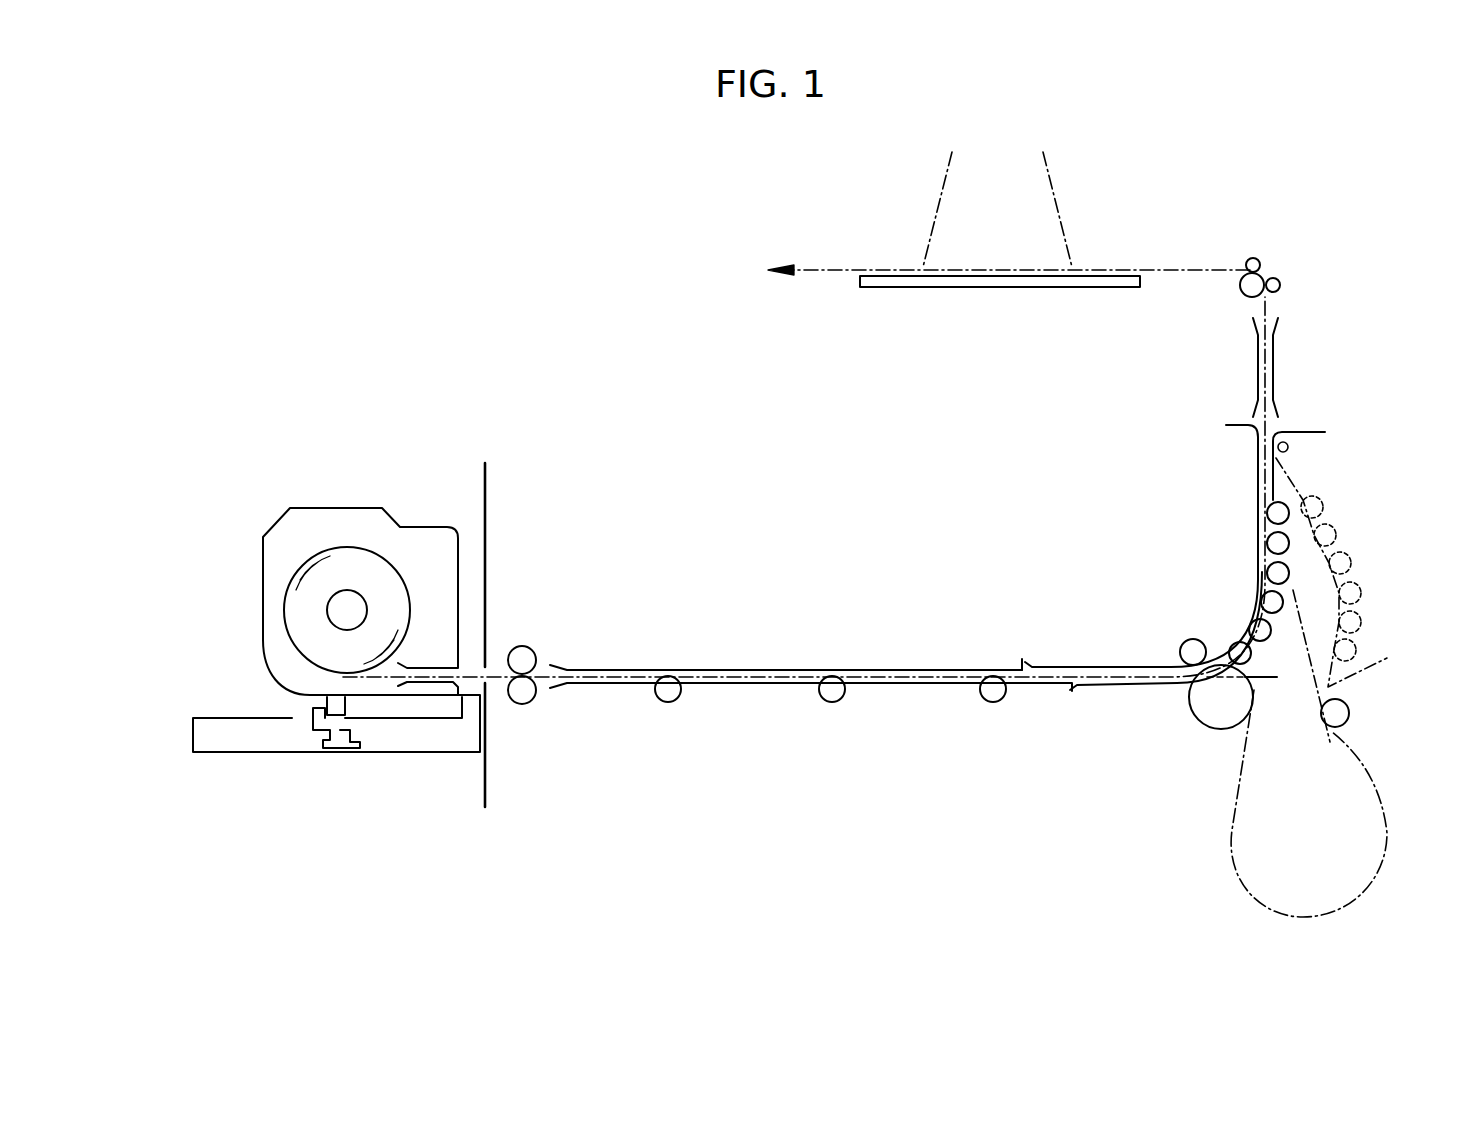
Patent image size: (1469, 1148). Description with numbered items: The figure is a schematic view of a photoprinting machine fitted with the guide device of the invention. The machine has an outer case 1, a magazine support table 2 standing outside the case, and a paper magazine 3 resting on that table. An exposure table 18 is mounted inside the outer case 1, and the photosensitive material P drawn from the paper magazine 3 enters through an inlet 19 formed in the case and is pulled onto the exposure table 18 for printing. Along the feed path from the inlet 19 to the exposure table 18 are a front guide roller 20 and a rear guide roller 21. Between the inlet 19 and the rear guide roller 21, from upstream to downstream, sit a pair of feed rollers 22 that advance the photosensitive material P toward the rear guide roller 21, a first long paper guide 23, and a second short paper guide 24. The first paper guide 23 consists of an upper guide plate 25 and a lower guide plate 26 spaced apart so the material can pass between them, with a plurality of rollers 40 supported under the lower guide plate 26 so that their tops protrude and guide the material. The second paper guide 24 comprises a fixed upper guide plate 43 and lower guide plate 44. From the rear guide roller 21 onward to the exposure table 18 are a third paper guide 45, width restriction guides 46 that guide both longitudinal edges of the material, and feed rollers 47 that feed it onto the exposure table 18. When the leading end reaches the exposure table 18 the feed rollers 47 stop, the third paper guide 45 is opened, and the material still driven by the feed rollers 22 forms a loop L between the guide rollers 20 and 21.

The outer case 1 is at (480, 484).
The magazine support table 2 is at (242, 755).
The paper magazine 3 is at (278, 518).
The exposure table 18 is at (955, 288).
The inlet 19 is at (490, 683).
The front guide roller 20 is at (1348, 707).
The rear guide roller 21 is at (1203, 724).
The feed rollers 22 is at (532, 631).
The first paper guide 23 is at (745, 660).
The second paper guide 24 is at (1082, 659).
The upper guide plate 25 is at (938, 667).
The lower guide plate 26 is at (905, 684).
The rollers 40 is at (830, 694).
The upper guide plate 43 is at (1131, 666).
The lower guide plate 44 is at (1122, 684).
The third paper guide 45 is at (1247, 484).
The width restriction guides 46 is at (1247, 364).
The feed rollers 47 is at (1279, 264).
The photosensitive material P is at (858, 667).
The loop L is at (1230, 835).